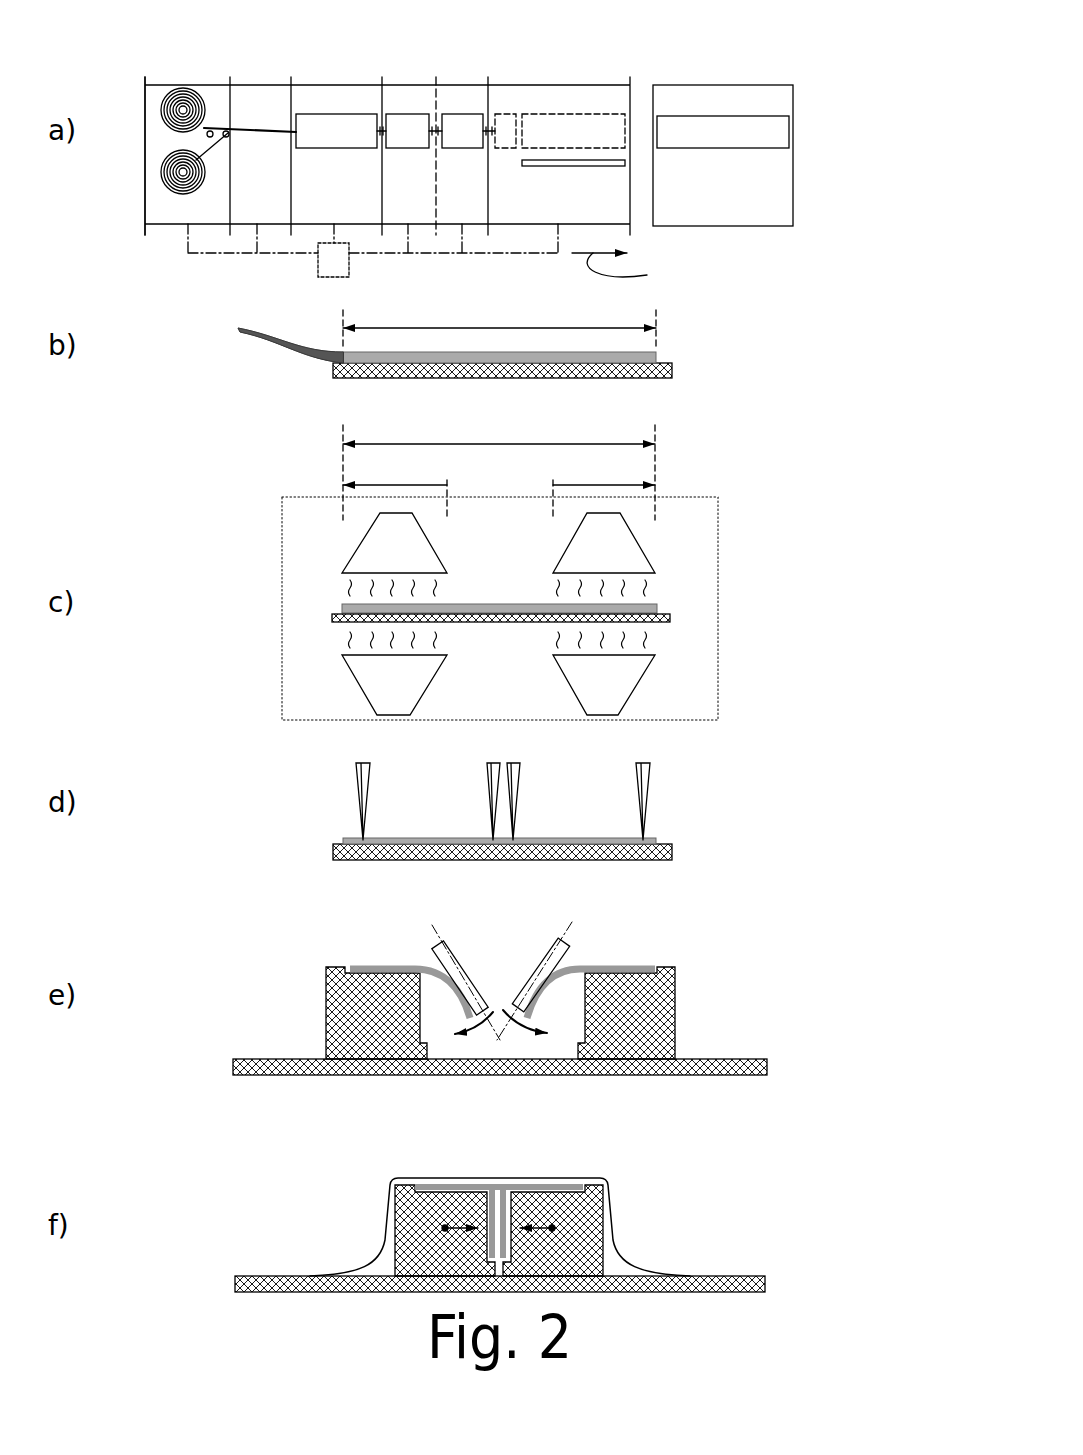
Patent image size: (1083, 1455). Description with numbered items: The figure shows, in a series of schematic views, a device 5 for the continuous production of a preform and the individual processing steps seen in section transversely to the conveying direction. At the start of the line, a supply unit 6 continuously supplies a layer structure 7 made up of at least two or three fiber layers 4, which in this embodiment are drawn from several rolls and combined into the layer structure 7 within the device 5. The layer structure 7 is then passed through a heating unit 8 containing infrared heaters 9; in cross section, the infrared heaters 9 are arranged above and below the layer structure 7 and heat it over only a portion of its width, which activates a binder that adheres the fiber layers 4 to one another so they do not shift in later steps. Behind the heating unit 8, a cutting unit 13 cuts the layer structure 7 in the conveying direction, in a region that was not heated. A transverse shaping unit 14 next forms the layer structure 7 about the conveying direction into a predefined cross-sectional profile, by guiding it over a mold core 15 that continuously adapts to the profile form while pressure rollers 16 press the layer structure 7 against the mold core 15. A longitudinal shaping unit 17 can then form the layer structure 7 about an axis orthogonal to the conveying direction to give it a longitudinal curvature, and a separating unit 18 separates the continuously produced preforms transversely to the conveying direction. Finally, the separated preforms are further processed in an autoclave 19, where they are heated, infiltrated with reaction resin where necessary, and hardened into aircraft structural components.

The fiber layer 4 is at (274, 339).
The device 5 is at (212, 50).
The supply unit 6 is at (140, 75).
The layer structure 7 is at (255, 100).
The heating unit 8 is at (549, 381).
The infrared heater 9 is at (333, 543).
The cutting unit 13 is at (405, 100).
The transverse shaping unit 14 is at (526, 653).
The mold core 15 is at (363, 1030).
The pressure rollers 16 is at (537, 958).
The longitudinal shaping unit 17 is at (510, 100).
The separating unit 18 is at (593, 100).
The autoclave 19 is at (725, 100).